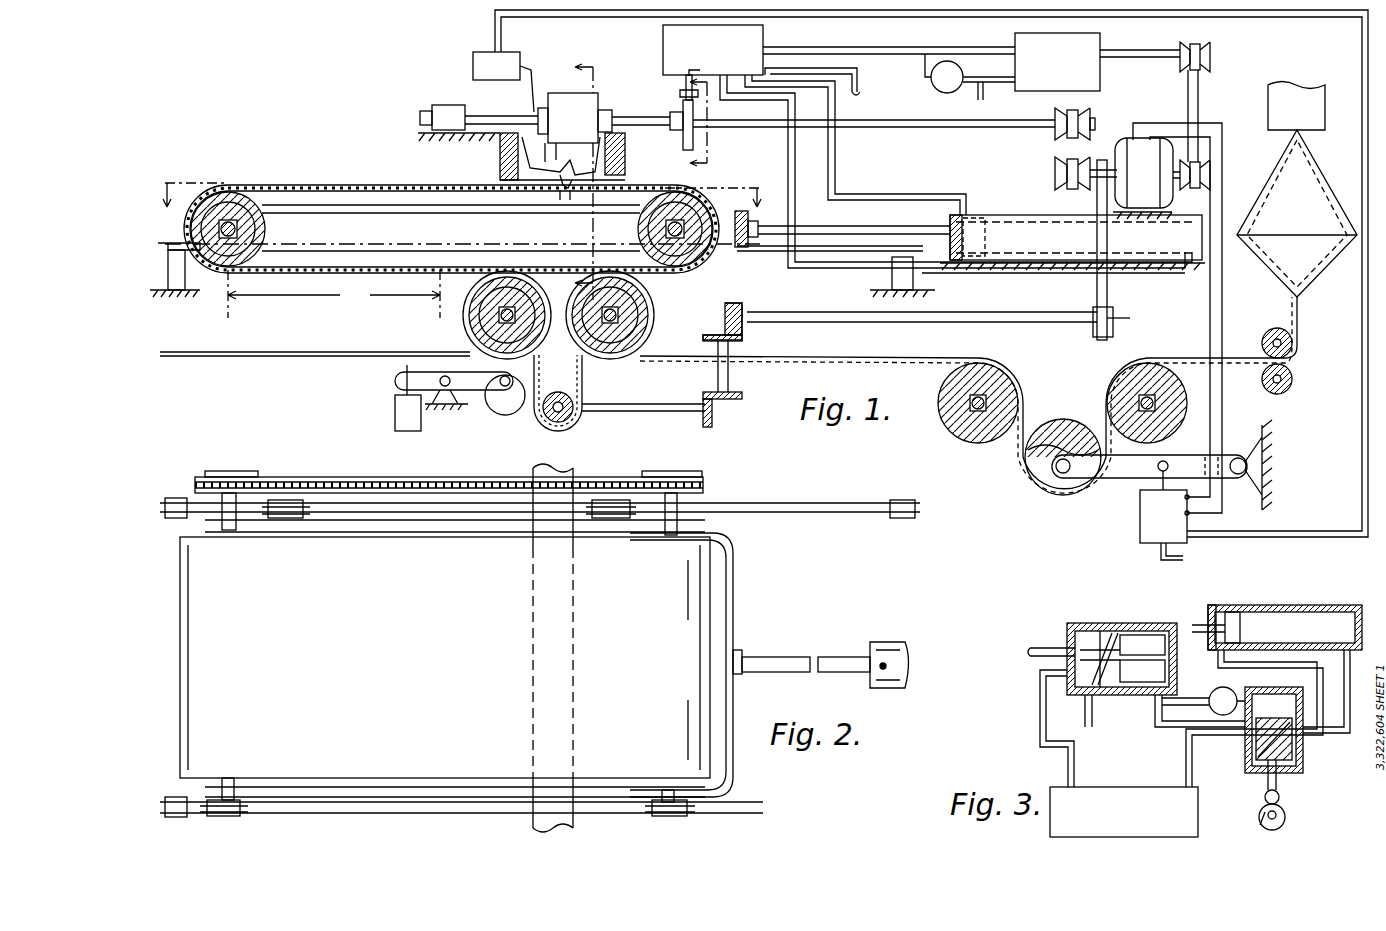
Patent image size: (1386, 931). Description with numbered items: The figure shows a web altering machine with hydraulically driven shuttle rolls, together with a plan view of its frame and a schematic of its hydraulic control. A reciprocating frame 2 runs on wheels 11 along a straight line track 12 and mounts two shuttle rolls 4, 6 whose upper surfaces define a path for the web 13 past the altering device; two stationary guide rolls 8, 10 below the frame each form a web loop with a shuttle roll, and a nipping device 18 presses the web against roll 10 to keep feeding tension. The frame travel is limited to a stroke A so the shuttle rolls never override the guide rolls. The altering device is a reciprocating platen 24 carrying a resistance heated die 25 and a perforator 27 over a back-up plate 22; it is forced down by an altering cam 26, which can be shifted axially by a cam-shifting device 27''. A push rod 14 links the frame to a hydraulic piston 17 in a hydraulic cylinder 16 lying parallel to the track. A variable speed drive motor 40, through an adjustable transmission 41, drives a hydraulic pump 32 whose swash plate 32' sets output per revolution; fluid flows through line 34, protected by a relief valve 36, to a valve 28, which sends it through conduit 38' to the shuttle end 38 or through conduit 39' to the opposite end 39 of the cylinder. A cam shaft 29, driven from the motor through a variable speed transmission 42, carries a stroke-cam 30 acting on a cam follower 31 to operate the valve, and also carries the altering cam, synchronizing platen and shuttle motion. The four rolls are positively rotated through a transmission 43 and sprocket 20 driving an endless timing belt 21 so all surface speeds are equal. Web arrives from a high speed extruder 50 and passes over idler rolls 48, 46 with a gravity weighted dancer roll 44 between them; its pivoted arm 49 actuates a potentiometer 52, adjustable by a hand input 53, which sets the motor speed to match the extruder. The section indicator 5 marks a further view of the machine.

In FIG. 1, the reciprocating frame 2 is at (378, 207).
In FIG. 2, the reciprocating frame 2 is at (415, 525).
In FIG. 1, the shuttle roll 4 is at (650, 230).
In FIG. 2, the shuttle roll 4 is at (700, 535).
In FIG. 1, the section line 5 is at (581, 170).
In FIG. 1, the shuttle roll 6 is at (232, 192).
In FIG. 2, the shuttle roll 6 is at (188, 538).
In FIG. 1, the guide roll 8 is at (648, 322).
In FIG. 1, the guide roll 10 is at (469, 316).
In FIG. 2, the wheels 11 is at (290, 498).
In FIG. 1, the straight line track 12 is at (168, 262).
In FIG. 2, the straight line track 12 is at (345, 505).
In FIG. 1, the web 13 is at (330, 186).
In FIG. 2, the web 13 is at (458, 664).
In FIG. 1, the push rod 14 is at (808, 240).
In FIG. 2, the push rod 14 is at (793, 660).
In FIG. 1, the hydraulic cylinder 16 is at (1022, 226).
In FIG. 2, the hydraulic cylinder 16 is at (892, 648).
In FIG. 3, the hydraulic cylinder 16 is at (1295, 610).
In FIG. 1, the hydraulic piston 17 is at (974, 220).
In FIG. 3, the hydraulic piston 17 is at (1238, 614).
In FIG. 1, the nipping device 18 is at (503, 410).
In FIG. 1, the sprocket 20 is at (580, 392).
In FIG. 1, the endless timing belt 21 is at (540, 385).
In FIG. 2, the endless timing belt 21 is at (500, 483).
In FIG. 1, the back-up plate 22 is at (570, 196).
In FIG. 1, the reciprocating platen 24 is at (500, 158).
In FIG. 1, the resistance heated die 25 is at (561, 154).
In FIG. 1, the altering cam 26 is at (588, 102).
In FIG. 1, the perforator 27 is at (634, 154).
In FIG. 1, the cam-shifting device 27'' is at (483, 78).
In FIG. 1, the valve 28 is at (750, 45).
In FIG. 3, the valve 28 is at (1250, 770).
In FIG. 1, the cam shaft 29 is at (944, 130).
In FIG. 3, the cam shaft 29 is at (1260, 826).
In FIG. 1, the stroke-cam 30 is at (683, 112).
In FIG. 3, the stroke-cam 30 is at (1286, 817).
In FIG. 1, the cam follower 31 is at (680, 92).
In FIG. 3, the cam follower 31 is at (1281, 795).
In FIG. 1, the hydraulic pump 32 is at (1097, 64).
In FIG. 3, the hydraulic pump 32 is at (1102, 640).
In FIG. 3, the swash plate 32' is at (1122, 635).
In FIG. 1, the line 34 is at (893, 57).
In FIG. 3, the line 34 is at (1150, 728).
In FIG. 1, the relief valve 36 is at (934, 88).
In FIG. 3, the relief valve 36 is at (1228, 716).
In FIG. 1, the shuttle end of the cylinder 38 is at (946, 219).
In FIG. 3, the shuttle end of the cylinder 38 is at (1214, 610).
In FIG. 1, the conduit 38' is at (855, 145).
In FIG. 3, the conduit 38' is at (1254, 718).
In FIG. 1, the opposite end of the cylinder 39 is at (957, 191).
In FIG. 3, the opposite end of the cylinder 39 is at (1329, 652).
In FIG. 1, the conduit 39' is at (1053, 288).
In FIG. 3, the conduit 39' is at (1336, 753).
In FIG. 1, the variable speed drive motor 40 is at (1152, 186).
In FIG. 1, the adjustable transmission 41 is at (1198, 112).
In FIG. 1, the variable speed transmission 42 is at (1055, 164).
In FIG. 1, the transmission 43 is at (1125, 306).
In FIG. 1, the dancer roll 44 is at (1052, 500).
In FIG. 1, the idler roll 46 is at (1000, 438).
In FIG. 1, the idler roll 48 is at (1110, 398).
In FIG. 1, the pivoted arm 49 is at (1133, 478).
In FIG. 1, the high speed extruder 50 is at (1325, 165).
In FIG. 1, the potentiometer 52 is at (1140, 530).
In FIG. 1, the hand input 53 is at (1160, 560).
In FIG. 1, the stroke A is at (334, 294).